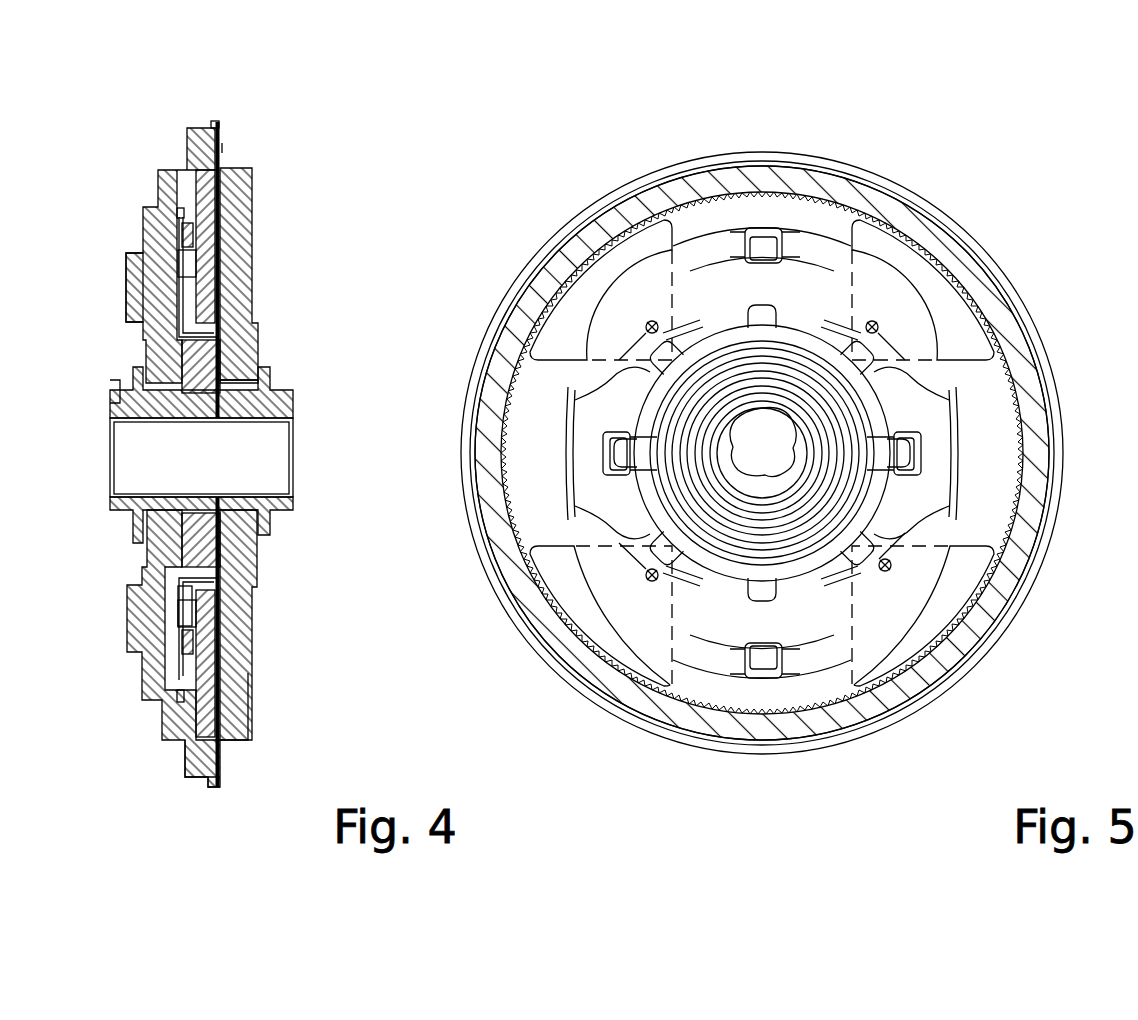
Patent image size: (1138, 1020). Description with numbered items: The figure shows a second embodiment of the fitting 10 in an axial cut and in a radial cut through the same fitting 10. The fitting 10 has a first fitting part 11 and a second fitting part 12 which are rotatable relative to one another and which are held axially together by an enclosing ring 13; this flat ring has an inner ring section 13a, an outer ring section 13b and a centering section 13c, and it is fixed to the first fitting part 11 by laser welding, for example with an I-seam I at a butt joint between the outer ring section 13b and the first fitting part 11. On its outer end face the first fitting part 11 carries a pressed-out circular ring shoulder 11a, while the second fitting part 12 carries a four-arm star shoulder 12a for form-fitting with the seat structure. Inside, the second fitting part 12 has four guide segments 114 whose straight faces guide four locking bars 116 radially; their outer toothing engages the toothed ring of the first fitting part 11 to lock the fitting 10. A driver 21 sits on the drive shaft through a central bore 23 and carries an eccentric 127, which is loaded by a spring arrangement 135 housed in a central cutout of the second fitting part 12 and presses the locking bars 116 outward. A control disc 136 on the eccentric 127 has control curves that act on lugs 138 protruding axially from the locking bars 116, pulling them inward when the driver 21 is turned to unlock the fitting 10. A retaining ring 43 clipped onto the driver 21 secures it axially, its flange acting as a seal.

In FIG. 4, the fitting 10 is at (308, 196).
In FIG. 5, the fitting 10 is at (985, 160).
In FIG. 4, the first fitting part 11 is at (163, 170).
In FIG. 5, the first fitting part 11 is at (635, 182).
In FIG. 4, the ring shoulder 11a is at (142, 285).
In FIG. 4, the second fitting part 12 is at (253, 262).
In FIG. 4, the star shoulder 12a is at (250, 625).
In FIG. 4, the enclosing ring 13 is at (225, 130).
In FIG. 5, the enclosing ring 13 is at (893, 170).
In FIG. 4, the inner ring section 13a is at (255, 732).
In FIG. 5, the inner ring section 13a is at (927, 200).
In FIG. 4, the outer ring section 13b is at (220, 767).
In FIG. 4, the centering section 13c is at (221, 787).
In FIG. 4, the driver 21 is at (262, 400).
In FIG. 5, the driver 21 is at (745, 480).
In FIG. 5, the central bore 23 is at (768, 450).
In FIG. 4, the retaining ring 43 is at (140, 503).
In FIG. 5, the guide segments 114 is at (570, 300).
In FIG. 4, the locking bars 116 is at (222, 300).
In FIG. 5, the locking bars 116 is at (767, 208).
In FIG. 4, the eccentric 127 is at (205, 365).
In FIG. 5, the eccentric 127 is at (648, 437).
In FIG. 5, the spring arrangement 135 is at (938, 612).
In FIG. 4, the control disc 136 is at (180, 595).
In FIG. 5, the control disc 136 is at (1008, 590).
In FIG. 4, the lug 138 is at (178, 235).
In FIG. 5, the lug 138 is at (757, 245).
In FIG. 4, the I-seam I is at (222, 148).